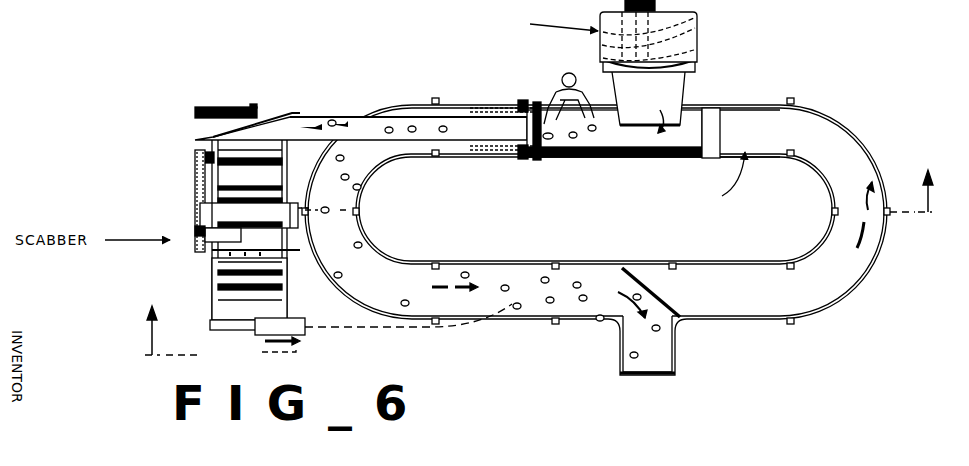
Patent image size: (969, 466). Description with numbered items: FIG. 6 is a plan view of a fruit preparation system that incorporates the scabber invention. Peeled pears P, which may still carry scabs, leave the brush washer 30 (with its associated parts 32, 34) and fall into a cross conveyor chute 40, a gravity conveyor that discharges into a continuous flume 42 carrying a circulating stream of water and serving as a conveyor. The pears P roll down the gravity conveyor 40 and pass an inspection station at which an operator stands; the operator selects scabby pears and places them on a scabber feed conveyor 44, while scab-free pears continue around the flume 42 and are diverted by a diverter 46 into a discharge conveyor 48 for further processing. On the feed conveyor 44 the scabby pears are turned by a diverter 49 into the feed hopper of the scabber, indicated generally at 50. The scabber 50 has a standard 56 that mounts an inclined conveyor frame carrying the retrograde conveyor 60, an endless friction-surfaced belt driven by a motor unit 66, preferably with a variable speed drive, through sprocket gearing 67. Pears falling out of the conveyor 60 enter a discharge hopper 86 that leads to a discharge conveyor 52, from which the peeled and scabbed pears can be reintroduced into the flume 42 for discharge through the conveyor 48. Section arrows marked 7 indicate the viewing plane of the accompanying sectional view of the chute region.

The brush-washer 30 is at (705, 16).
The brush-washer bottom plate 32 is at (698, 58).
The brush 34 is at (704, 40).
The cross conveyor chute 40 is at (692, 96).
The continuous flume 42 is at (852, 141).
The scabber feed conveyor 44 is at (322, 115).
The diverter 46 is at (646, 283).
The discharge conveyor 48 is at (678, 356).
The diverter 49 is at (247, 122).
The scabber 50 is at (208, 152).
The discharge conveyor 52 is at (304, 333).
The standard 56 is at (206, 213).
The retrograde conveyor 60 is at (232, 297).
The motor unit 66 is at (215, 233).
The sprocket gearing 67 is at (200, 193).
The discharge hopper 86 is at (246, 323).
The section line 7- 7 is at (539, 263).
The pears P is at (411, 128).